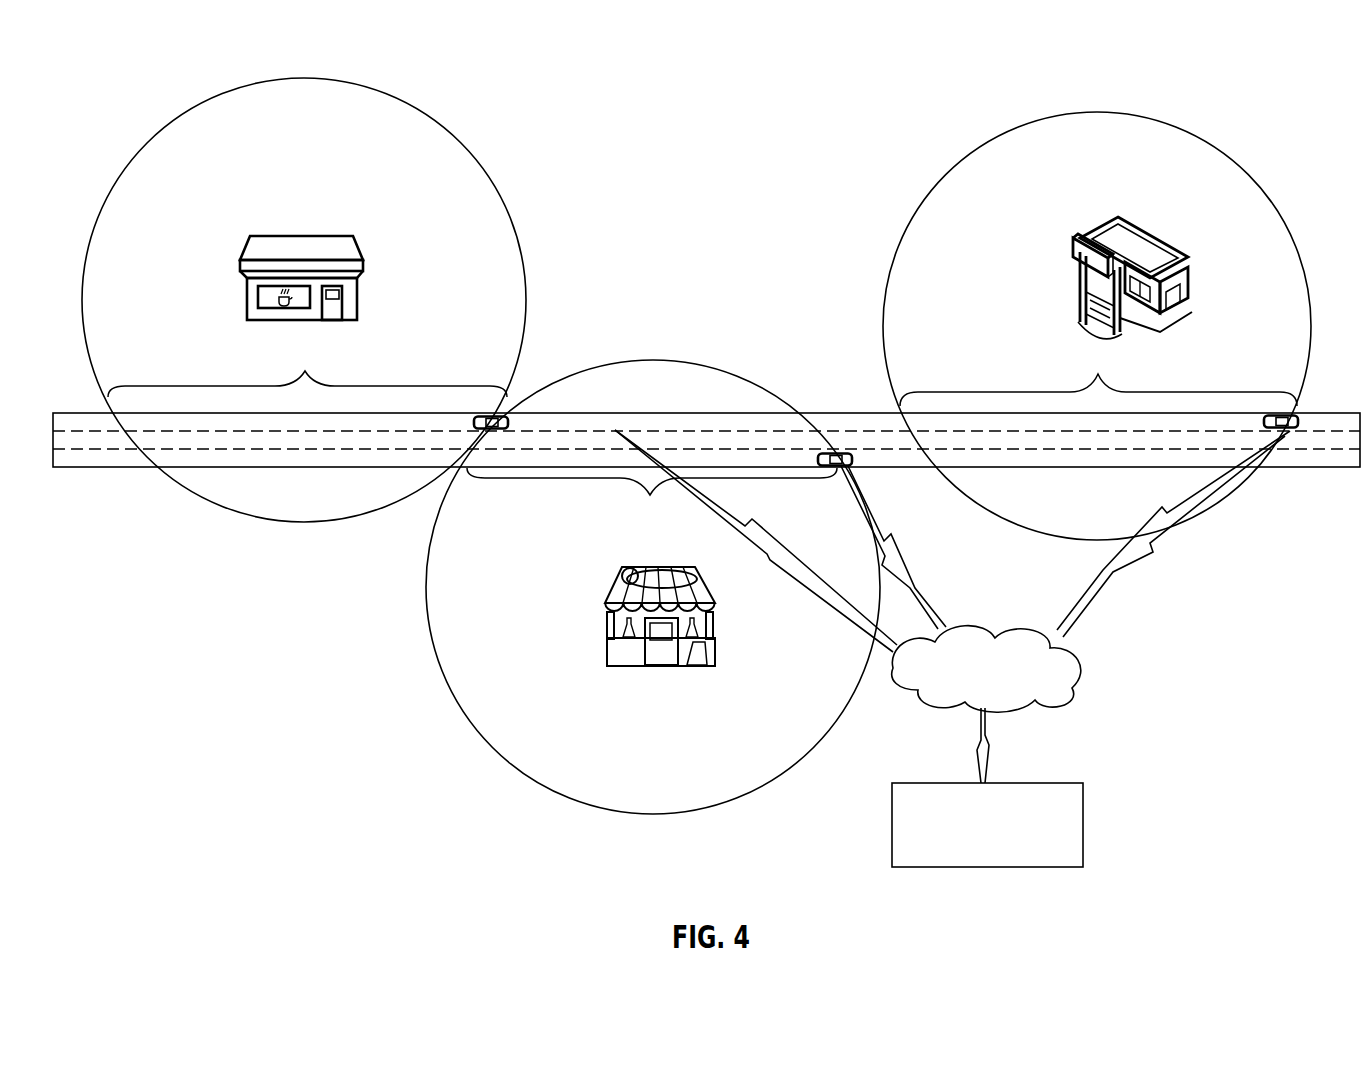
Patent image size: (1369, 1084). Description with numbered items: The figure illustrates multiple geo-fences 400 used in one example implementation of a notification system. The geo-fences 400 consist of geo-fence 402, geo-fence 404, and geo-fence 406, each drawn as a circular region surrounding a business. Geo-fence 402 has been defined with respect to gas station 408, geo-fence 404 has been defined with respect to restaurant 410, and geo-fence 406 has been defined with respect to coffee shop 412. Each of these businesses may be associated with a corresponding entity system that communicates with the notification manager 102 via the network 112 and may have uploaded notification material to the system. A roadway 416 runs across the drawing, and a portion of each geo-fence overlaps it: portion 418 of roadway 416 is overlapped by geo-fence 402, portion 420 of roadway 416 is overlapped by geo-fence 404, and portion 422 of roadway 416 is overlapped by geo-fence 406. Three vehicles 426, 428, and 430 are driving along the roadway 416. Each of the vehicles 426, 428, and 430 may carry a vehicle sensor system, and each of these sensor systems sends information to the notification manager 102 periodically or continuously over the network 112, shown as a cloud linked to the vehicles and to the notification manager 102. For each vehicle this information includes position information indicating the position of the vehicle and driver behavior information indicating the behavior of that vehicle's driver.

The geo-fences 400 is at (128, 83).
The geo-fence 402 is at (988, 141).
The geo-fence 404 is at (558, 796).
The geo-fence 406 is at (146, 141).
The gas station 408 is at (1067, 260).
The restaurant 410 is at (658, 656).
The coffee shop 412 is at (317, 250).
The roadway 416 is at (197, 452).
The portion of roadway 418 is at (1098, 373).
The portion of roadway 420 is at (652, 499).
The portion of roadway 422 is at (307, 368).
The vehicle 426 is at (1299, 422).
The vehicle 428 is at (835, 452).
The vehicle 430 is at (510, 420).
The network 112 is at (1085, 667).
The notification manager 102 is at (1037, 782).